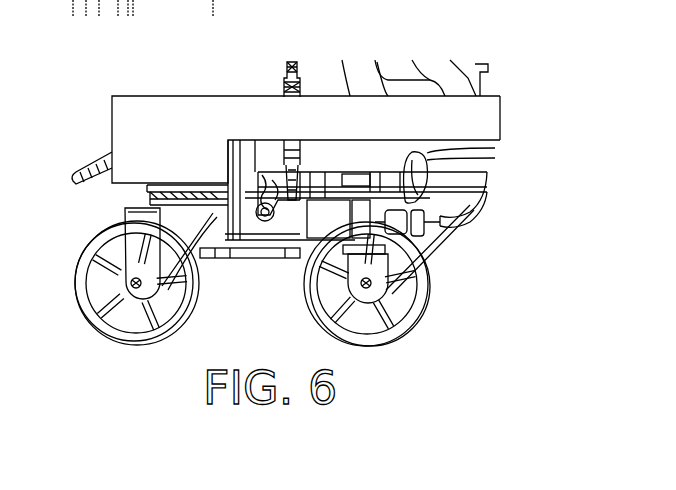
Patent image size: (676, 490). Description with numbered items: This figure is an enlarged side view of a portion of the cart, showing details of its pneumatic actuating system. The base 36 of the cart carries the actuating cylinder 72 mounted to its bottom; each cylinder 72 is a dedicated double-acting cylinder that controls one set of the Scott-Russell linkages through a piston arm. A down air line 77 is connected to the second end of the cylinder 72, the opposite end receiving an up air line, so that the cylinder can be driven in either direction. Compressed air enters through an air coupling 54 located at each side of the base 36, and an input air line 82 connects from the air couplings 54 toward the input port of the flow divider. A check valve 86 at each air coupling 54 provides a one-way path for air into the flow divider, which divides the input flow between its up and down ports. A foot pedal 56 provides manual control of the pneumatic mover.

The base 36 is at (138, 110).
The air coupling 54 is at (292, 62).
The foot pedal 56 is at (92, 180).
The actuating cylinder 72 is at (368, 160).
The down air line 77 is at (265, 223).
The input air line 82 is at (302, 203).
The check valve 86 is at (292, 168).